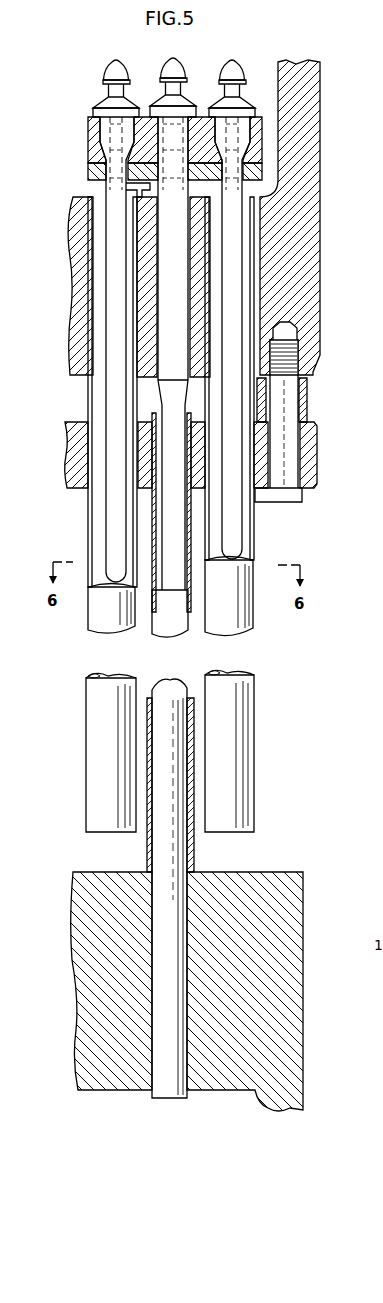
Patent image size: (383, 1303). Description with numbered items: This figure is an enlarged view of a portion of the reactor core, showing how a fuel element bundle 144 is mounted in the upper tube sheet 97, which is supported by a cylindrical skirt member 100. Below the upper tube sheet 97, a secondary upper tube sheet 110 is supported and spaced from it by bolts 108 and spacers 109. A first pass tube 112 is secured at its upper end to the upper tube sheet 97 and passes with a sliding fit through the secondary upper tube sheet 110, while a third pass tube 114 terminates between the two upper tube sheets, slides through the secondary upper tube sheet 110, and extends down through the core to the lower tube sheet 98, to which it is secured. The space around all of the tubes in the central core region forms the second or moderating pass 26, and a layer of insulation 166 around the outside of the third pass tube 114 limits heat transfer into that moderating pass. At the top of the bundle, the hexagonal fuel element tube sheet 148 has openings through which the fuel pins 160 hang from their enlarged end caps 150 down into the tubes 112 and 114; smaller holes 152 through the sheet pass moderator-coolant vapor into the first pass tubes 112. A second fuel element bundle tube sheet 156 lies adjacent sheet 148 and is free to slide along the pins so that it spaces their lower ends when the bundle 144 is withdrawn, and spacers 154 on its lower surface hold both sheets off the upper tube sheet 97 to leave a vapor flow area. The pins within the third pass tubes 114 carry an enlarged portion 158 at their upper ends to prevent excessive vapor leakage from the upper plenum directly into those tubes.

The fuel element bundle 144 is at (86, 85).
The enlarged end caps 150 is at (233, 68).
The smaller holes 152 is at (203, 118).
The cylindrical skirt member 100 is at (310, 78).
The fuel element tube sheet 148 is at (92, 138).
The second fuel element bundle tube sheet 156 is at (95, 168).
The spacers 154 is at (143, 184).
The upper tube sheet 97 is at (287, 276).
The enlarged portion 158 is at (185, 308).
The spacers 109 is at (305, 387).
The bolts 108 is at (282, 409).
The secondary upper tube sheet 110 is at (313, 446).
The fuel pins 160 is at (173, 523).
The tubes 112 is at (100, 610).
The layer of insulation 166 is at (151, 614).
The tubes 114 is at (173, 622).
The second or moderating pass 26 is at (72, 748).
The lower tube sheet 98 is at (238, 880).